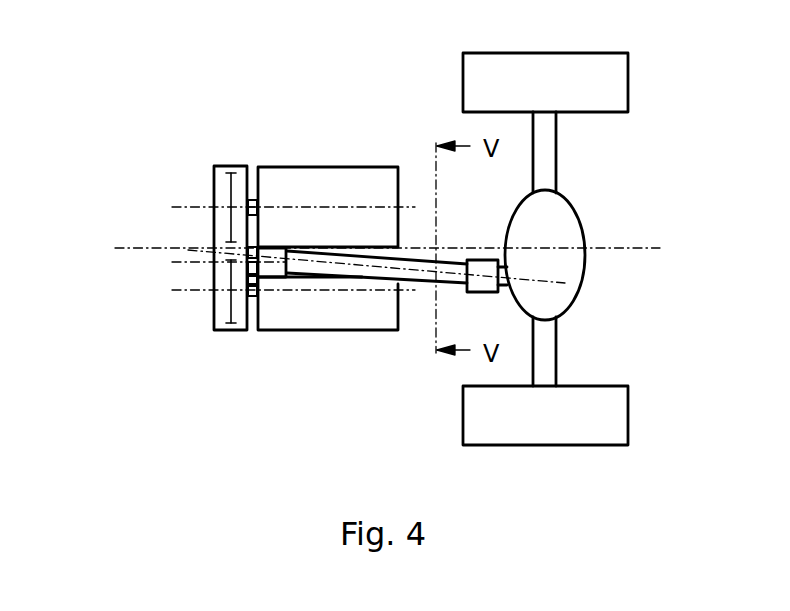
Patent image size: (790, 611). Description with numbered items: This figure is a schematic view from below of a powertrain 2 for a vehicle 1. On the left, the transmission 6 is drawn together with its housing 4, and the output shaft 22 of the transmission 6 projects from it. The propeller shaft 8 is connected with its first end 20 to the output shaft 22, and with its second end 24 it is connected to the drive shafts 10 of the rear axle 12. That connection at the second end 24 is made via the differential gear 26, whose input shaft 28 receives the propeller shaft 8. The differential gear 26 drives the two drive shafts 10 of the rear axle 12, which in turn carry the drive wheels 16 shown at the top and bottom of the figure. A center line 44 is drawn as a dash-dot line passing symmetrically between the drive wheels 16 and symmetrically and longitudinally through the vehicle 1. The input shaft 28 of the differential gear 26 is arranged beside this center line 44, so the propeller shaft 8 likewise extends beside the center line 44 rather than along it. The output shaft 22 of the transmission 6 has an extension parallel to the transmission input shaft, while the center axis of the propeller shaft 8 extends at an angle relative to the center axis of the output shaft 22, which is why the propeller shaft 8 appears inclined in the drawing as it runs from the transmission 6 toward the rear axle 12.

The vehicle 1 is at (120, 90).
The powertrain 2 is at (320, 382).
The electric motor housing 4 is at (278, 168).
The transmission 6 is at (228, 165).
The propeller shaft 8 is at (418, 282).
The drive shafts 10 is at (556, 163).
The rear axle 12 is at (636, 266).
The drive wheels 16 is at (577, 53).
The first end 20 is at (287, 277).
The output shaft 22 is at (255, 320).
The second end 24 is at (480, 258).
The differential gear 26 is at (583, 227).
The input shaft 28 is at (504, 288).
The center line 44 is at (147, 249).